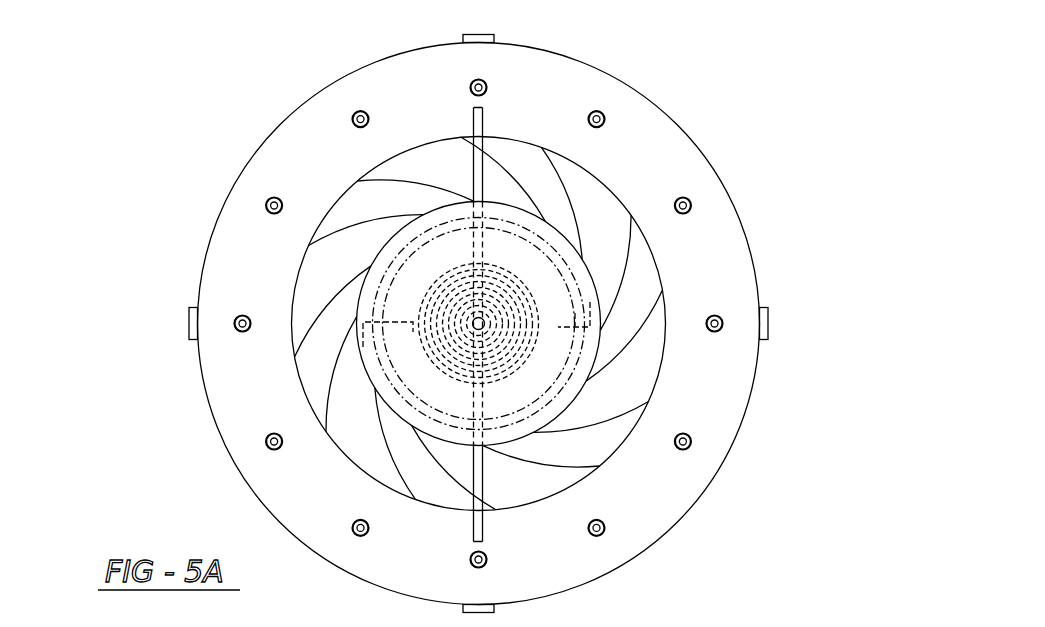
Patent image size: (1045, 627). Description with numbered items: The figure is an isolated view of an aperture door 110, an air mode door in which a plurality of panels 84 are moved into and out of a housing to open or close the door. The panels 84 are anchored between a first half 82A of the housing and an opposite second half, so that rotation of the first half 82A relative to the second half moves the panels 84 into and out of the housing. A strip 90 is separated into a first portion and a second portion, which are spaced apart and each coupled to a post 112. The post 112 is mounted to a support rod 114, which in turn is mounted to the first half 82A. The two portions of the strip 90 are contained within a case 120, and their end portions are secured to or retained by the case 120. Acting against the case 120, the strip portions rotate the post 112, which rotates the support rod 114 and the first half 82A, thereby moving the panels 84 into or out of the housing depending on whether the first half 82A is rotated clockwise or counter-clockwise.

The aperture door 110 is at (222, 88).
The first half of the housing 82A is at (643, 118).
The panels 84 is at (433, 160).
The support rod 114 is at (483, 119).
The case 120 is at (387, 241).
The strip 90 is at (525, 255).
The post 112 is at (478, 325).